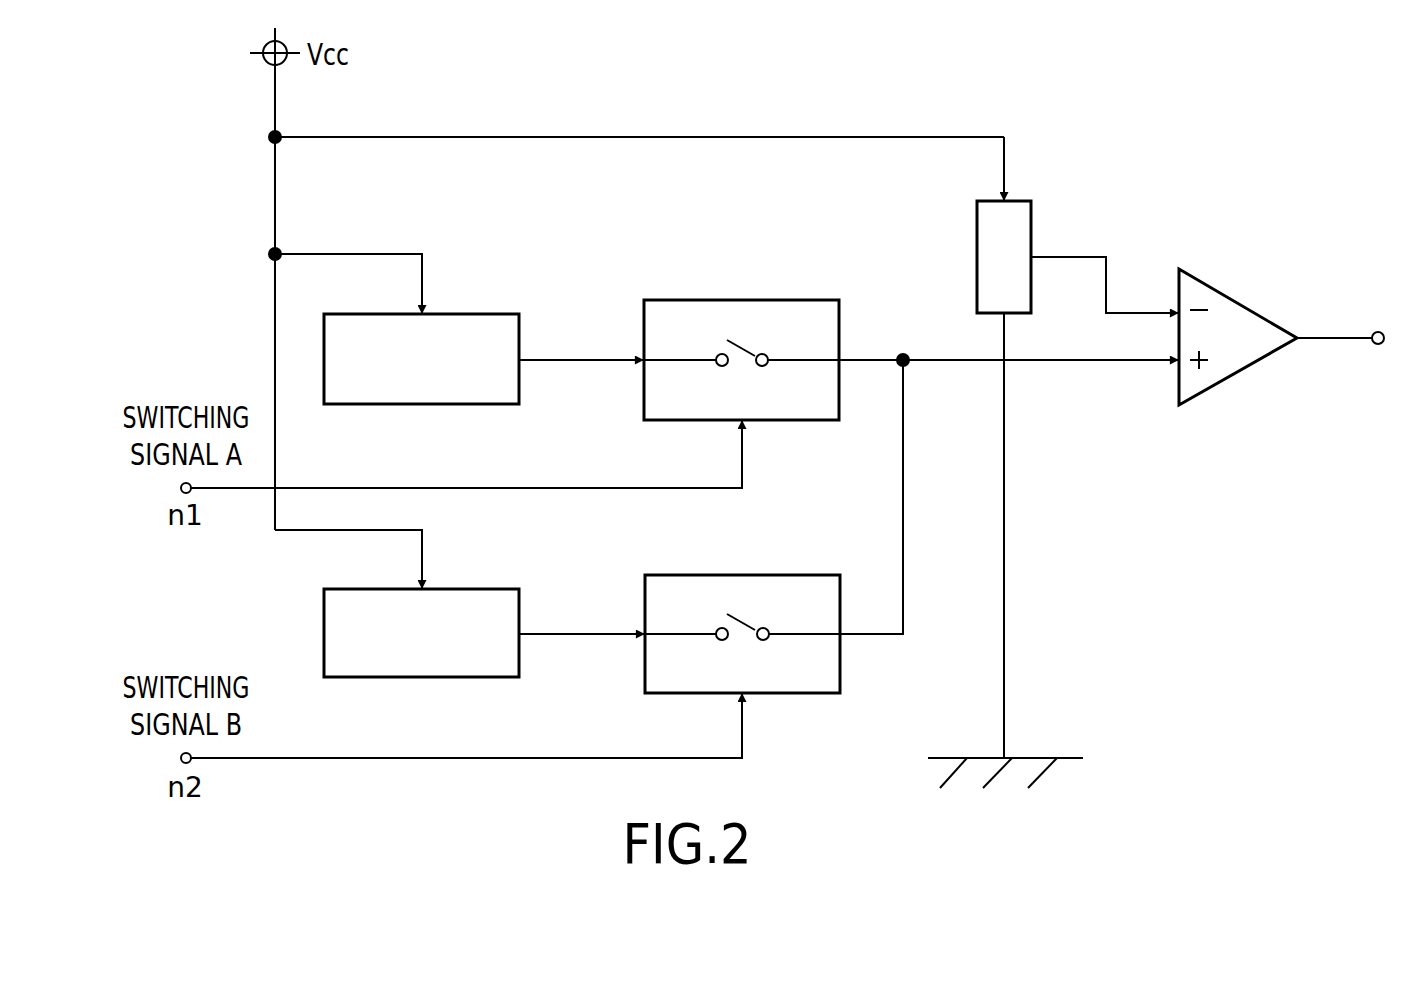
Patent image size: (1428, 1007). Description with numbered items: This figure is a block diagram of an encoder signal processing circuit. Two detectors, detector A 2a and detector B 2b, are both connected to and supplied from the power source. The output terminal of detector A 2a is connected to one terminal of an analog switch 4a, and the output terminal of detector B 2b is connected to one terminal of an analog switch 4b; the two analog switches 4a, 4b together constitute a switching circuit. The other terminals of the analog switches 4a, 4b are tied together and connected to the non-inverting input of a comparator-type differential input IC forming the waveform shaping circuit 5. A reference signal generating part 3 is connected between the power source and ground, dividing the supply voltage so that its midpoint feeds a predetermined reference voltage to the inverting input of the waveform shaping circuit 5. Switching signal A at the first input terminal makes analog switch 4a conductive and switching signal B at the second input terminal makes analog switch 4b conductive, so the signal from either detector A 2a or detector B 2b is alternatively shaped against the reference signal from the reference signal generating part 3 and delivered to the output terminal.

The detector A 2a is at (452, 314).
The detector B 2b is at (452, 589).
The analog switch 4a is at (742, 300).
The analog switch 4b is at (742, 575).
The reference signal generating part 3 is at (1031, 233).
The waveform shaping circuit 5 is at (1240, 303).